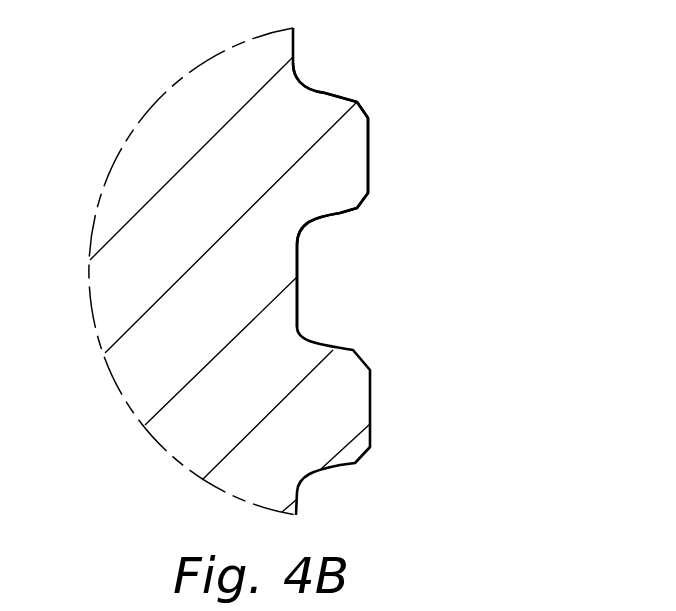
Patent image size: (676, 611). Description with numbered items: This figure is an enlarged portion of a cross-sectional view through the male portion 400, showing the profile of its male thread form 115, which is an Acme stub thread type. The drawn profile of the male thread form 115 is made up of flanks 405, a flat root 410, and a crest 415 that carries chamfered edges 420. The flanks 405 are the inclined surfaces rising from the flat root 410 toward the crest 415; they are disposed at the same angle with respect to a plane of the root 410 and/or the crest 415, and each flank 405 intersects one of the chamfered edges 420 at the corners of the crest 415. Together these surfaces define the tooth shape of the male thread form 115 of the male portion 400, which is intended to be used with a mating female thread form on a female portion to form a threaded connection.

The male thread form 115 is at (505, 90).
The male portion 400 is at (107, 277).
The flanks 405 is at (333, 93).
The flat root 410 is at (297, 300).
The crest 415 is at (369, 155).
The chamfered edges 420 is at (362, 108).